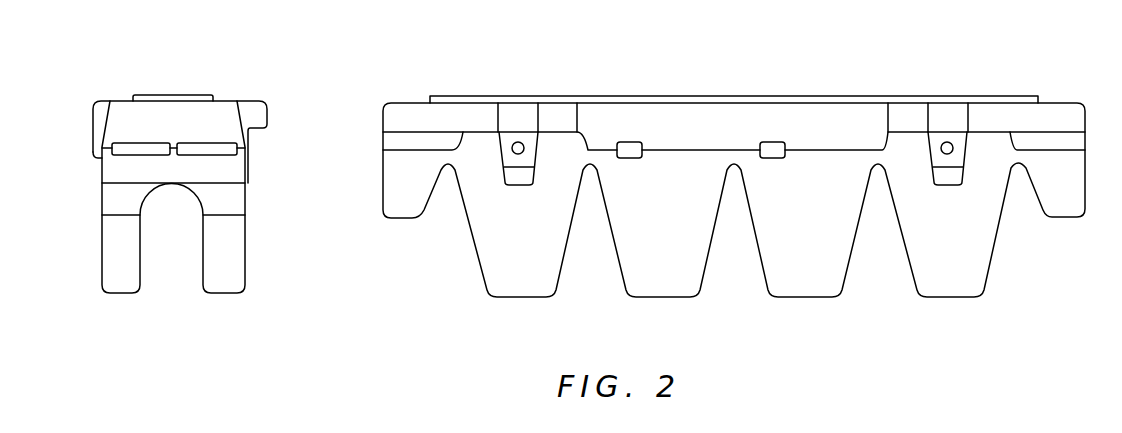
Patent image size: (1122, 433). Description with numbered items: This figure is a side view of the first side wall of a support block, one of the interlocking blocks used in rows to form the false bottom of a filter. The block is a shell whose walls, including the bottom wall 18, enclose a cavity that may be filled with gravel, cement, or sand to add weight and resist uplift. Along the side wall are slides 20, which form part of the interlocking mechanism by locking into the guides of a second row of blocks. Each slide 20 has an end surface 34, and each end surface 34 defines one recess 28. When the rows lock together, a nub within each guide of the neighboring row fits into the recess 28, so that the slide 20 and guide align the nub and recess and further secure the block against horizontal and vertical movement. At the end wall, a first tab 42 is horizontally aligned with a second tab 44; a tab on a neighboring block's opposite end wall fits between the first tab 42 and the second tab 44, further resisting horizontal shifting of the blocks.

The bottom wall 18 is at (523, 298).
The slide 20 is at (507, 112).
The recess 28 is at (523, 133).
The end surface 34 is at (532, 148).
The first tab 42 is at (192, 137).
The second tab 44 is at (153, 137).